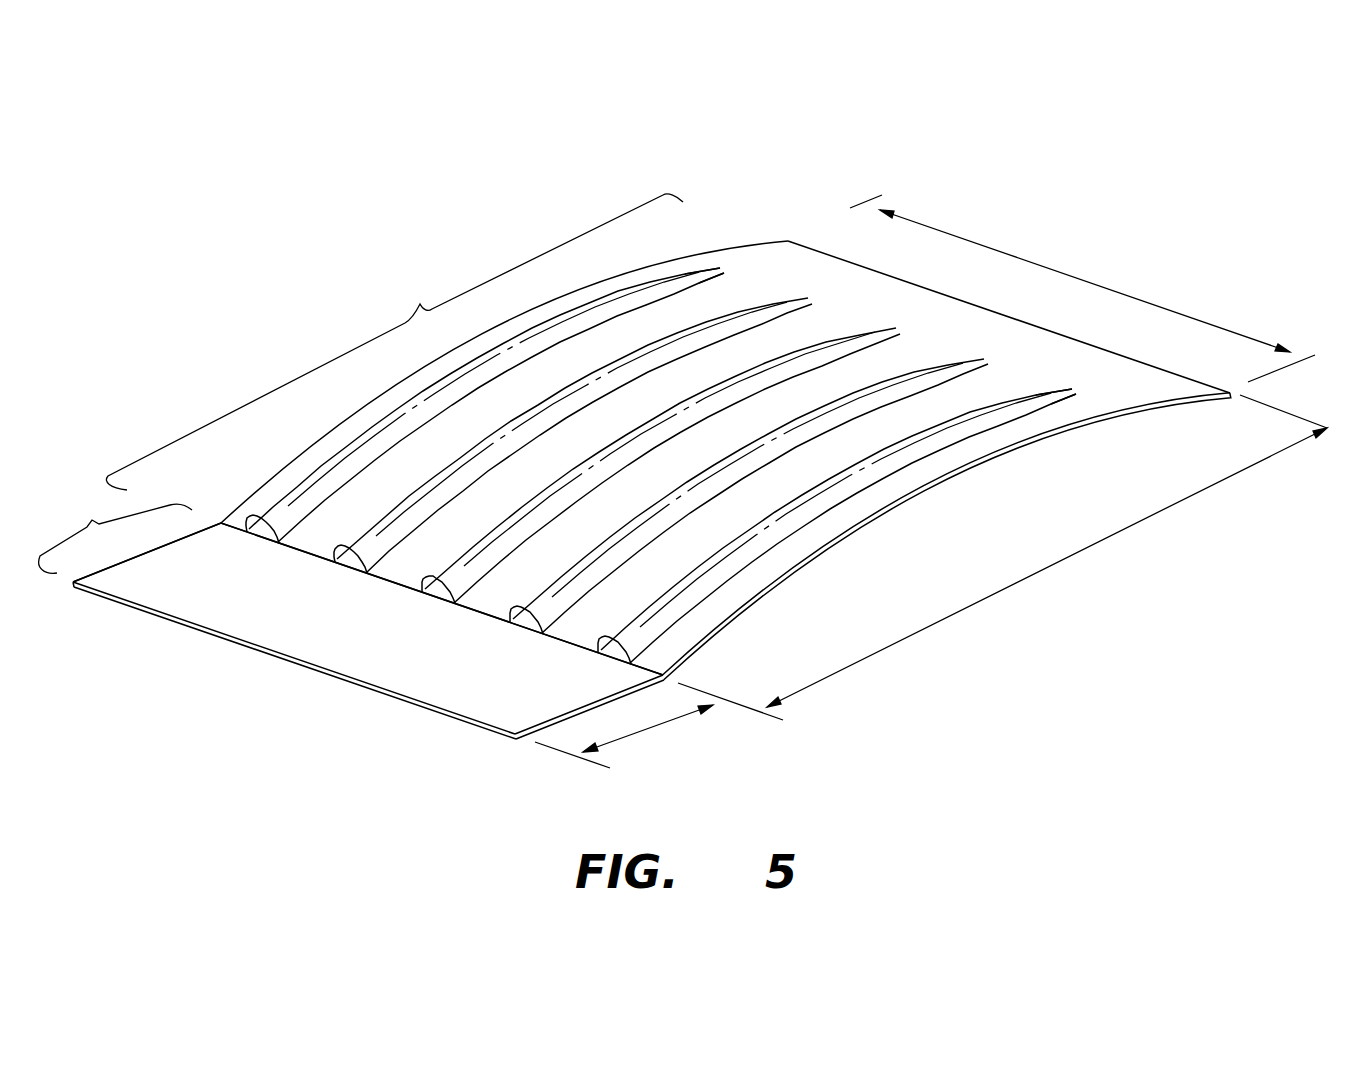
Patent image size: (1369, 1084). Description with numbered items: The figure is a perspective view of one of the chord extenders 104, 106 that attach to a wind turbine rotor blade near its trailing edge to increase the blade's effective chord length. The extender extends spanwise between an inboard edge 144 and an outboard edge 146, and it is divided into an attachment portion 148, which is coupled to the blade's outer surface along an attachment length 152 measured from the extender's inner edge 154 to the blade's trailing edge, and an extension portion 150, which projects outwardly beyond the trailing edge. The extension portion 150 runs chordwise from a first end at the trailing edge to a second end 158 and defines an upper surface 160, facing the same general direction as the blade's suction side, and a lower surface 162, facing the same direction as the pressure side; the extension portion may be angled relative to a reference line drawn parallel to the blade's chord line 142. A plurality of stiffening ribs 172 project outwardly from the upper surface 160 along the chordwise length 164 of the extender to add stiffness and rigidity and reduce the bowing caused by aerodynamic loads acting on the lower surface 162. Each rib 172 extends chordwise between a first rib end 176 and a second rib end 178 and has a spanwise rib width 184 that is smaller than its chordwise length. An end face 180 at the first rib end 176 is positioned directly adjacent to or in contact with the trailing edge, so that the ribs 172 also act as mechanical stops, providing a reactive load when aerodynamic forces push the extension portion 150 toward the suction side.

The chord extender 104 is at (652, 500).
The chord extender 106 is at (262, 322).
The chord line 142 is at (885, 517).
The inboard edge 144 is at (395, 386).
The outboard edge 146 is at (1072, 272).
The attachment portion 148 is at (114, 534).
The extension portion 150 is at (394, 342).
The attachment length 152 is at (652, 728).
The inner edge 154 is at (370, 690).
The second end 158 is at (1095, 347).
The upper surface 160 is at (912, 322).
The lower surface 162 is at (987, 466).
The chordwise length 164 is at (1035, 573).
The stiffening ribs 172 is at (490, 388).
The first rib end 176 is at (365, 533).
The second rib end 178 is at (805, 306).
The end face 180 is at (350, 560).
The spanwise rib width 184 is at (686, 553).